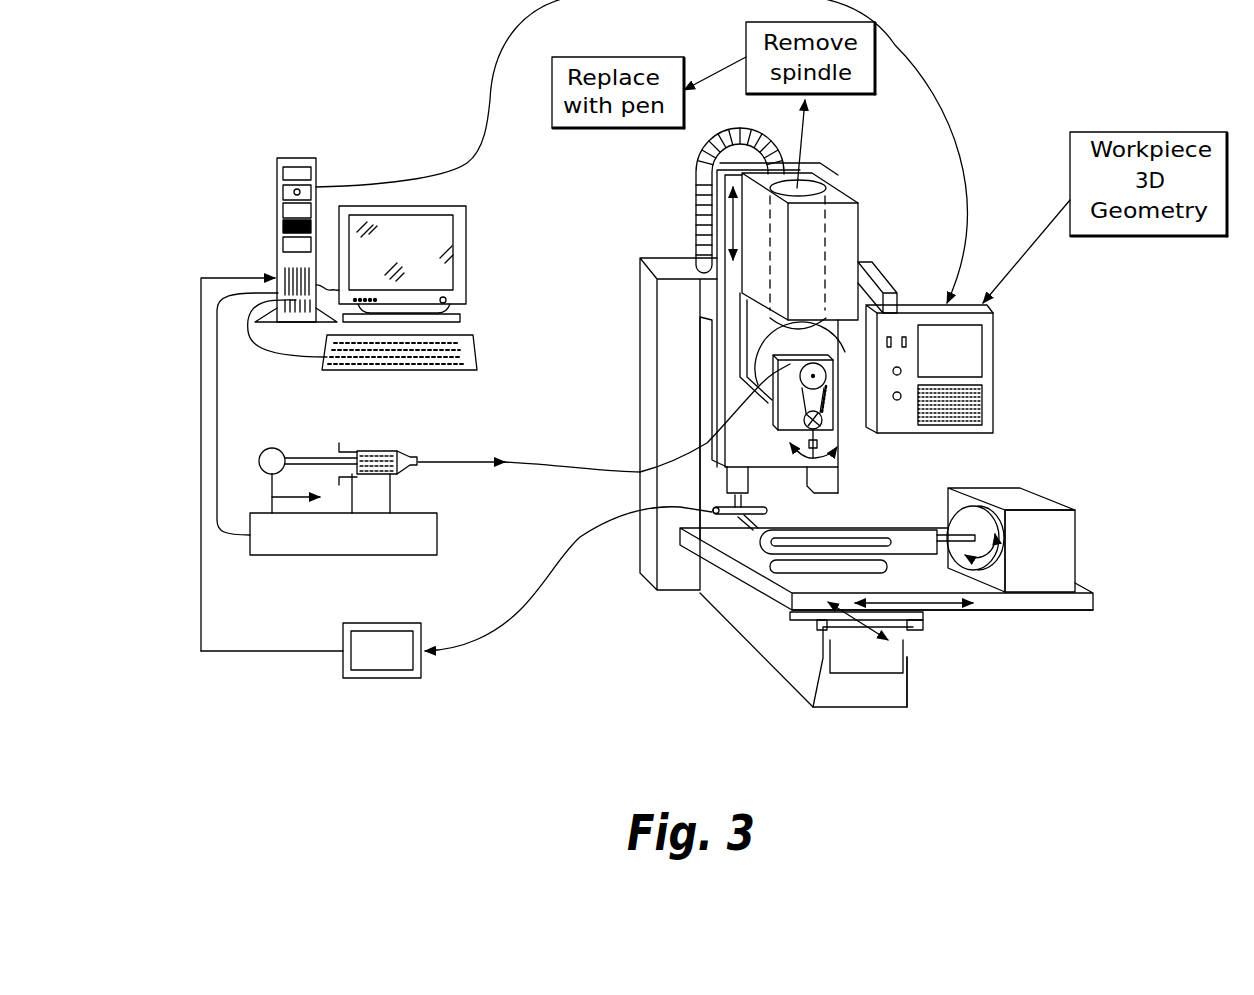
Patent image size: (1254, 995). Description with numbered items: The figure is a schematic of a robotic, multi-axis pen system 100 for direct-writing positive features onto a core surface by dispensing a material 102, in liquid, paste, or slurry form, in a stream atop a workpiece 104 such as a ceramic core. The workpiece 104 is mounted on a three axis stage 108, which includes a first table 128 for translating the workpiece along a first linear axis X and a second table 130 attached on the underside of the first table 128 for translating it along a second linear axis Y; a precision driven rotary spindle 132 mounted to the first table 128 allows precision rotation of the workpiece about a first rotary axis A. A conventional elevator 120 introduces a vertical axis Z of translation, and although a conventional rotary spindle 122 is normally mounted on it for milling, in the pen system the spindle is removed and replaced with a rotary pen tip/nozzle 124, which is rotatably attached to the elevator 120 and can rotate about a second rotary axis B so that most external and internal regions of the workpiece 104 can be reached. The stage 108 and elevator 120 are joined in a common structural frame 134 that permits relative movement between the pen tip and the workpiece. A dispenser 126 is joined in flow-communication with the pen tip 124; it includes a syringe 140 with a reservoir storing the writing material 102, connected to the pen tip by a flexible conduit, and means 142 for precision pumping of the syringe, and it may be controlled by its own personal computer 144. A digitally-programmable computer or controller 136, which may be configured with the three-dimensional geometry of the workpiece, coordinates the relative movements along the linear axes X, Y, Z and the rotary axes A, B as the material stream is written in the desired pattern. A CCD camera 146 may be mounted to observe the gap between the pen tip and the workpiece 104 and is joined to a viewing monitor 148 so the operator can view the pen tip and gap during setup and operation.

The robotic pen system 100 is at (258, 168).
The personal computer 144 is at (466, 268).
The means for precision pumping 142 is at (278, 447).
The syringe 140 is at (378, 450).
The material 102 is at (402, 455).
The dispenser 126 is at (343, 514).
The probe display unit 148 is at (421, 625).
The charge coupled device (CCD) camera 146 is at (723, 508).
The workpiece 104 is at (770, 553).
The elevator 120 is at (835, 178).
The rotary spindle 122 is at (813, 183).
The rotary pen tip/nozzle 124 is at (838, 446).
The computer or controller 136 is at (993, 356).
The three axis stage 108 is at (1090, 585).
The precision driven rotary spindle 132 is at (1033, 490).
The first table 128 is at (1093, 602).
The second table 130 is at (923, 620).
The common structural frame 134 is at (863, 697).
The vertical axis Z is at (733, 223).
The second rotary axis B is at (803, 458).
The first rotary axis A is at (982, 560).
The first linear axis X is at (937, 605).
The second linear axis Y is at (863, 620).